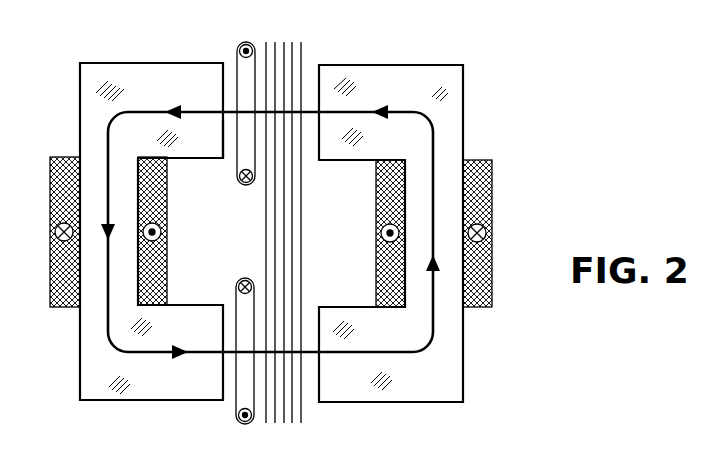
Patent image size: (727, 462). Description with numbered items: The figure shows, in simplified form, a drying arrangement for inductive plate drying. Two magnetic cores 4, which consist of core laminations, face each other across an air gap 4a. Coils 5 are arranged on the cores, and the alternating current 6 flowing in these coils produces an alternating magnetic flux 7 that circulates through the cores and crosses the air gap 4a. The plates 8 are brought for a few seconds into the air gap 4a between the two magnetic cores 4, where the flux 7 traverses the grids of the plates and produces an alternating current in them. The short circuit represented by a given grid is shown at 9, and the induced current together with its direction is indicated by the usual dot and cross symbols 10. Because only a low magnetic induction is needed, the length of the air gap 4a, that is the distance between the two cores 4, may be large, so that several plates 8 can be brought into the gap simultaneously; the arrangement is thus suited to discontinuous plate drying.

The magnetic core 4 is at (128, 78).
The air gap 4a is at (230, 71).
The coil 5 is at (492, 184).
The alternating current 6 is at (490, 229).
The alternating magnetic flux 7 is at (409, 354).
The plate 8 is at (302, 424).
The short circuit 9 is at (248, 423).
The dot and cross symbols 10 is at (239, 419).